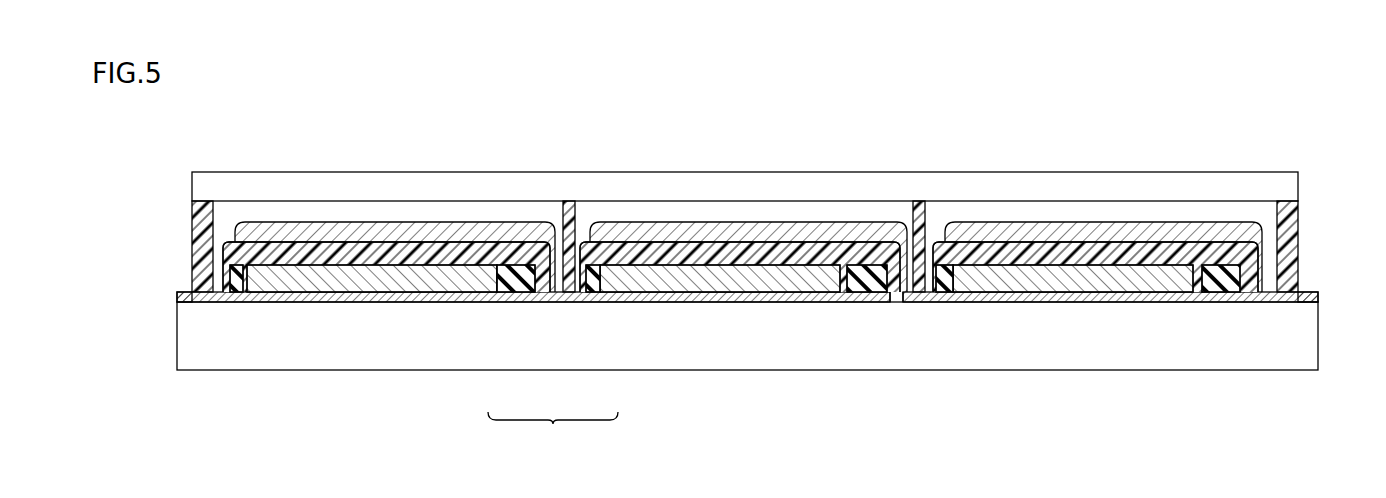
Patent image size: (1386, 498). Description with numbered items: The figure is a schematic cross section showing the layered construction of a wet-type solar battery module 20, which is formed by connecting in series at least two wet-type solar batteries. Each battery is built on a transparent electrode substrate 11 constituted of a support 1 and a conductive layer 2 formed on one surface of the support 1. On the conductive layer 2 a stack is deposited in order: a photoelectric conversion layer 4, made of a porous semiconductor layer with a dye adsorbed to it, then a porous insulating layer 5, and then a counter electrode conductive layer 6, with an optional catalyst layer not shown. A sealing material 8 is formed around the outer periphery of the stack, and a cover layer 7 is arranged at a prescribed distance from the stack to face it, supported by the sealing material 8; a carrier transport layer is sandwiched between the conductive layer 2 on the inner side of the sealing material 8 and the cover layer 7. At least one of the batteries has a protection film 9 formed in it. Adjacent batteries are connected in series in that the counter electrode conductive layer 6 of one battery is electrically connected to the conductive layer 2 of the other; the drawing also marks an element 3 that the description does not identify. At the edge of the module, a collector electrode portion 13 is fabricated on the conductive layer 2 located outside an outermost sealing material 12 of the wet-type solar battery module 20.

The support 1 is at (505, 352).
The conductive layer 2 is at (604, 304).
The opening 3 is at (895, 304).
The photoelectric conversion layer 4 is at (1020, 277).
The porous insulating layer 5 is at (1080, 253).
The counter electrode conductive layer 6 is at (1160, 225).
The cover layer 7 is at (508, 187).
The sealing material 8 is at (568, 210).
The protection film 9 is at (581, 270).
The transparent electrode substrate 11 is at (553, 430).
The outermost sealing material 12 is at (200, 248).
The collector electrode portion 13 is at (183, 297).
The wet-type solar battery module 20 is at (1260, 128).